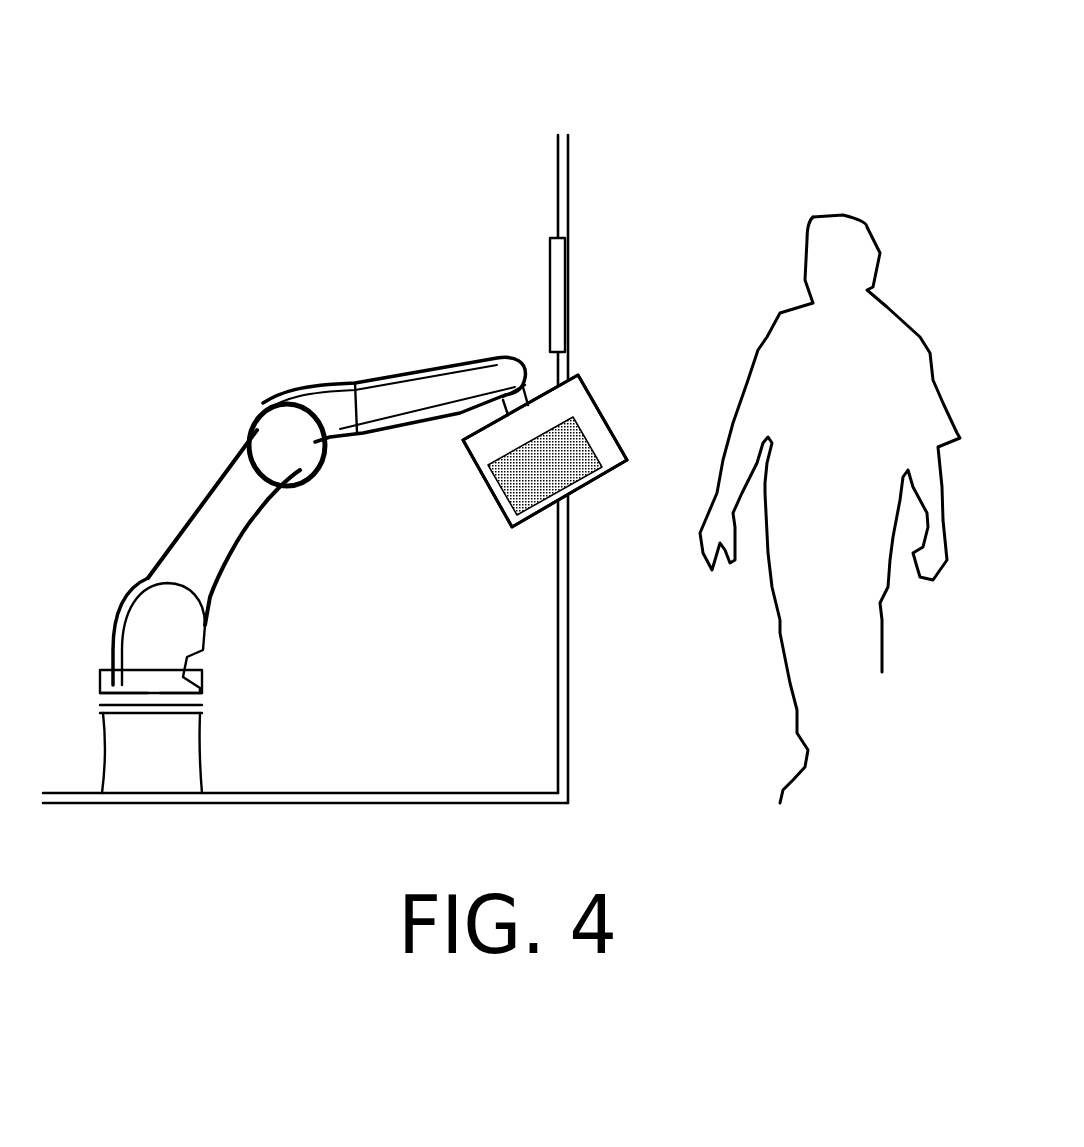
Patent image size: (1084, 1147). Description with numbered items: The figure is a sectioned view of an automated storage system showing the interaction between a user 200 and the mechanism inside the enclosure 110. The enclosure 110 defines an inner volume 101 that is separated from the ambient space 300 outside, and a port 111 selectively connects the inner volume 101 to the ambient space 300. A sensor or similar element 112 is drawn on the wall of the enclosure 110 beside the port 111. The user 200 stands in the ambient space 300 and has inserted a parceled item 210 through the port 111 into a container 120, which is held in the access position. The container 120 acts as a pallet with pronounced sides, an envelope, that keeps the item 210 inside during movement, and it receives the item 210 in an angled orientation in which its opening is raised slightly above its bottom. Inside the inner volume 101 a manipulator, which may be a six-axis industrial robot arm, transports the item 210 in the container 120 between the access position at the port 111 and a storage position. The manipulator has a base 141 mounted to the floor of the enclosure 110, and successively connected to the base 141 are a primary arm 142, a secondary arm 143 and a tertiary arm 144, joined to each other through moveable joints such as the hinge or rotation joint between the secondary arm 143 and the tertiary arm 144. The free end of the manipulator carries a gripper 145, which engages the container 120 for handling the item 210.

The enclosure 110 is at (563, 133).
The port 111 is at (603, 405).
The sensor 112 is at (560, 297).
The container 120 is at (482, 516).
The item 210 is at (513, 488).
The user 200 is at (852, 240).
The ambient space 300 is at (705, 743).
The inner volume 101 is at (500, 743).
The base 141 is at (163, 638).
The primary arm 142 is at (200, 540).
The secondary arm 143 is at (322, 402).
The tertiary arm 144 is at (427, 383).
The gripper 145 is at (502, 403).